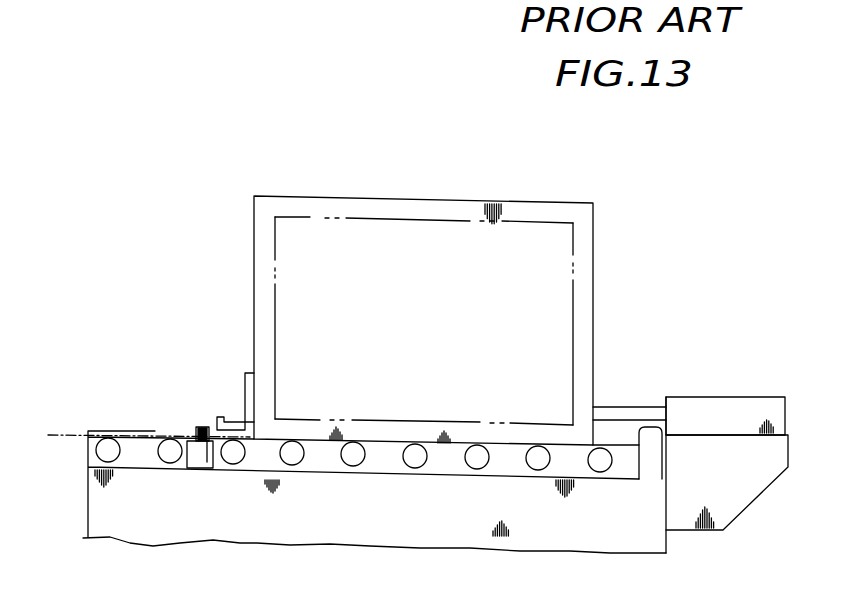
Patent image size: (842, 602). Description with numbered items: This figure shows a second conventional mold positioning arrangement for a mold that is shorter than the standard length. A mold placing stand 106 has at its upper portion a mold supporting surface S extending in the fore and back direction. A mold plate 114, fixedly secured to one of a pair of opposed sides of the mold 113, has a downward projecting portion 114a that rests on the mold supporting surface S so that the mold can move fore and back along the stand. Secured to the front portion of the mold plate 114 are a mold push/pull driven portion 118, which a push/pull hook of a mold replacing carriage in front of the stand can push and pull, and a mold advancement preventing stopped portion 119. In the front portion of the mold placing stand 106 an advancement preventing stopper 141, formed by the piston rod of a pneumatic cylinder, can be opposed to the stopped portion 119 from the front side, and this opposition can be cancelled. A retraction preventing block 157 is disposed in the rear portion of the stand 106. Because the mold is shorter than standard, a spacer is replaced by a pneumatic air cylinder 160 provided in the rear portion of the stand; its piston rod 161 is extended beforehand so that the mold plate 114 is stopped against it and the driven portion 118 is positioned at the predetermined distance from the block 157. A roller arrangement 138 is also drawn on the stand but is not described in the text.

The mold placing stand 106 is at (672, 543).
The mold plate 114 is at (366, 191).
The mold 113 is at (403, 218).
The downward projecting portion 114a is at (385, 431).
The roller conveyor / block 138 is at (198, 466).
The advancement preventing stopper 141 is at (200, 428).
The mold advancement preventing stopped portion 119 is at (203, 427).
The mold push/pull driven portion 118 is at (221, 416).
The mold supporting surface S is at (122, 434).
The piston rod 161 is at (627, 415).
The pneumatic air cylinder 160 is at (722, 408).
The retraction preventing block 157 is at (652, 455).